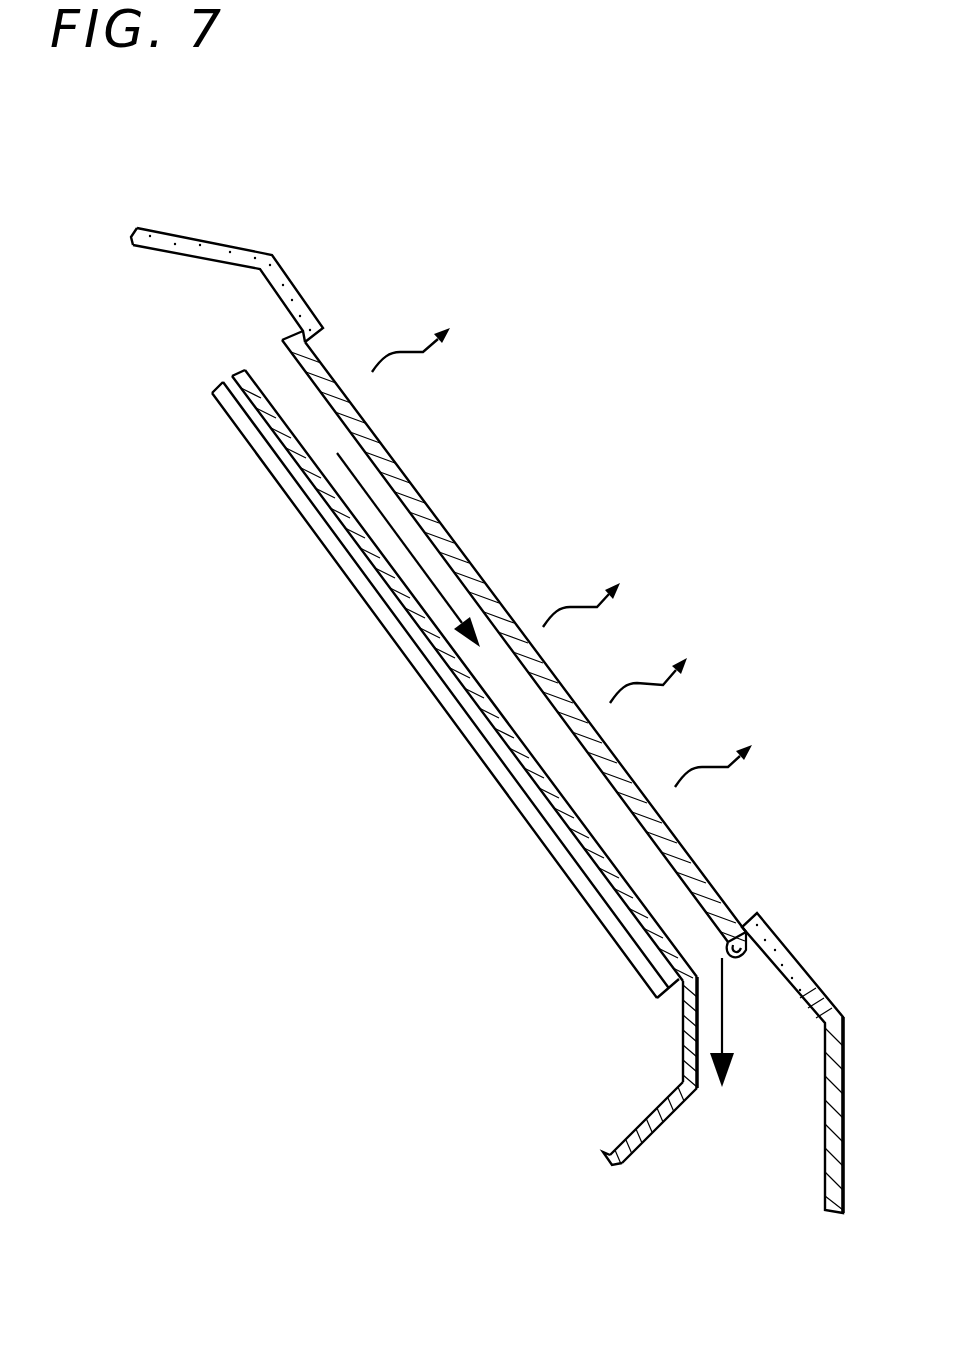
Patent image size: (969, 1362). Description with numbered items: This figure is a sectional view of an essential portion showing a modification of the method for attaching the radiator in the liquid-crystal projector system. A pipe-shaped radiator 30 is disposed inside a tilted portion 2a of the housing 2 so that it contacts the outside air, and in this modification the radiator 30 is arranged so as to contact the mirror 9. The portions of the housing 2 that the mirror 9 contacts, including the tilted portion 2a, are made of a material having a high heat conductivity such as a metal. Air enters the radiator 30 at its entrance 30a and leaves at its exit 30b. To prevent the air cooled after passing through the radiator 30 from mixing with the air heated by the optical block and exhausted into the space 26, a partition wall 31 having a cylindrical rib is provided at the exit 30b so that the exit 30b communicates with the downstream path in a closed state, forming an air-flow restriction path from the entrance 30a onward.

The housing 2 is at (277, 262).
The tilted portion 2a is at (798, 963).
The mirror 9 is at (413, 668).
The space 26 is at (272, 604).
The radiator 30 is at (437, 517).
The entrance of the radiator 30a is at (247, 368).
The exit of the radiator 30b is at (763, 930).
The partition wall 31 is at (628, 1130).